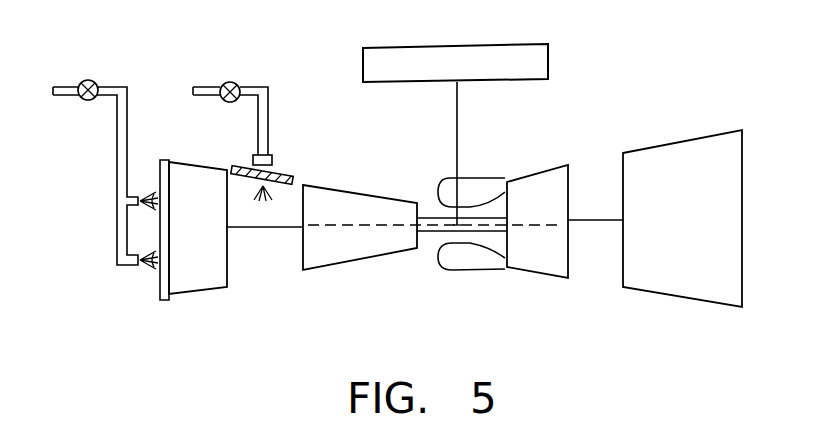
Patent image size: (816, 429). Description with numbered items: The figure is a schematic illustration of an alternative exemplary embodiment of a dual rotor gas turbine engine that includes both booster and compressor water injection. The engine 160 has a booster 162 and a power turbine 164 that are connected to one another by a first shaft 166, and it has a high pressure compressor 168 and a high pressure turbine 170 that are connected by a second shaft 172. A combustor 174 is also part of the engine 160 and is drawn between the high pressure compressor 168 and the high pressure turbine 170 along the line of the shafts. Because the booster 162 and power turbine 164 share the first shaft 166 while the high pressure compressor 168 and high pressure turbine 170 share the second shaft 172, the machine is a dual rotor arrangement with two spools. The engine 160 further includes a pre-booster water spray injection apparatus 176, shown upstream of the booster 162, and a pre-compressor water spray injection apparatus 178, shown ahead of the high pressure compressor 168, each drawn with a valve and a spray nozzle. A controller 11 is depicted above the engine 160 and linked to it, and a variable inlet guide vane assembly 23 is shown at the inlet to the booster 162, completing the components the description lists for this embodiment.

The controller 11 is at (390, 46).
The variable inlet guide vane assembly 23 is at (162, 160).
The engine 160 is at (562, 112).
The booster 162 is at (220, 290).
The power turbine 164 is at (687, 299).
The first shaft 166 is at (245, 229).
The high pressure compressor 168 is at (395, 253).
The high pressure turbine 170 is at (528, 274).
The second shaft 172 is at (427, 220).
The combustor 174 is at (465, 271).
The pre-booster water spray injection apparatus 176 is at (115, 150).
The pre-compressor water spray injection apparatus 178 is at (270, 122).